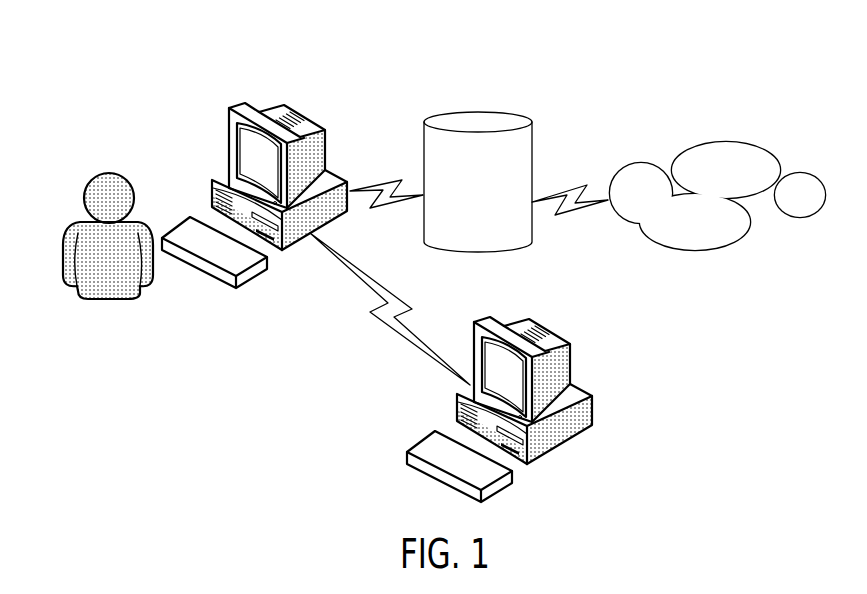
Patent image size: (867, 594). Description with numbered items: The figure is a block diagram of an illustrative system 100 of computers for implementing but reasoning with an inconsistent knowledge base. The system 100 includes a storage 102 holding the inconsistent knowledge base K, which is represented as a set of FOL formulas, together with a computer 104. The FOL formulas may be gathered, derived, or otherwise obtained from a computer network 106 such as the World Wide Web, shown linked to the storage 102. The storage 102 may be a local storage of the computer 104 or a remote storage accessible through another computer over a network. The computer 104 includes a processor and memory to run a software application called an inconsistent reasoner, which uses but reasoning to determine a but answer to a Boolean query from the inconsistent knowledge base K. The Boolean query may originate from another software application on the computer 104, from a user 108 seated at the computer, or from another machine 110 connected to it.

The system 100 is at (168, 73).
The storage 102 is at (518, 113).
The computer 104 is at (317, 123).
The computer network 106 is at (707, 142).
The user 108 is at (88, 177).
The machine 110 is at (570, 345).